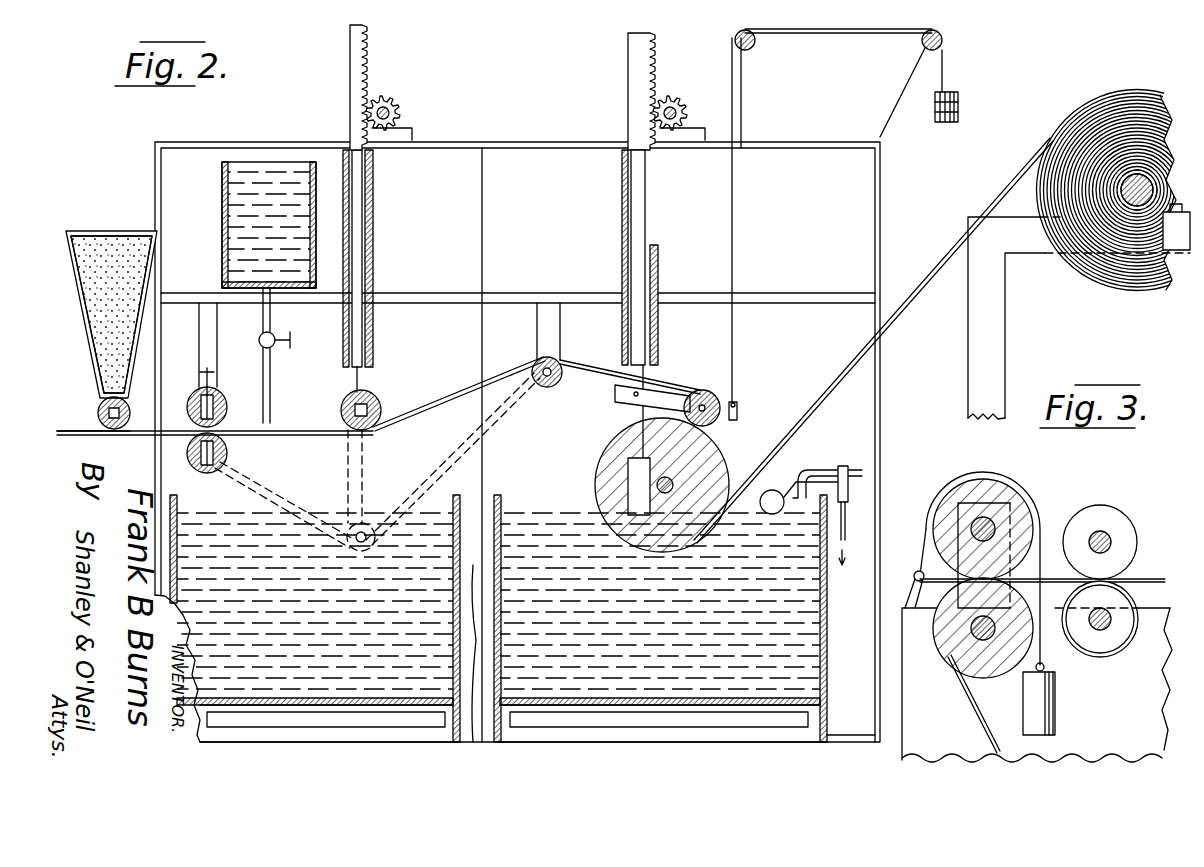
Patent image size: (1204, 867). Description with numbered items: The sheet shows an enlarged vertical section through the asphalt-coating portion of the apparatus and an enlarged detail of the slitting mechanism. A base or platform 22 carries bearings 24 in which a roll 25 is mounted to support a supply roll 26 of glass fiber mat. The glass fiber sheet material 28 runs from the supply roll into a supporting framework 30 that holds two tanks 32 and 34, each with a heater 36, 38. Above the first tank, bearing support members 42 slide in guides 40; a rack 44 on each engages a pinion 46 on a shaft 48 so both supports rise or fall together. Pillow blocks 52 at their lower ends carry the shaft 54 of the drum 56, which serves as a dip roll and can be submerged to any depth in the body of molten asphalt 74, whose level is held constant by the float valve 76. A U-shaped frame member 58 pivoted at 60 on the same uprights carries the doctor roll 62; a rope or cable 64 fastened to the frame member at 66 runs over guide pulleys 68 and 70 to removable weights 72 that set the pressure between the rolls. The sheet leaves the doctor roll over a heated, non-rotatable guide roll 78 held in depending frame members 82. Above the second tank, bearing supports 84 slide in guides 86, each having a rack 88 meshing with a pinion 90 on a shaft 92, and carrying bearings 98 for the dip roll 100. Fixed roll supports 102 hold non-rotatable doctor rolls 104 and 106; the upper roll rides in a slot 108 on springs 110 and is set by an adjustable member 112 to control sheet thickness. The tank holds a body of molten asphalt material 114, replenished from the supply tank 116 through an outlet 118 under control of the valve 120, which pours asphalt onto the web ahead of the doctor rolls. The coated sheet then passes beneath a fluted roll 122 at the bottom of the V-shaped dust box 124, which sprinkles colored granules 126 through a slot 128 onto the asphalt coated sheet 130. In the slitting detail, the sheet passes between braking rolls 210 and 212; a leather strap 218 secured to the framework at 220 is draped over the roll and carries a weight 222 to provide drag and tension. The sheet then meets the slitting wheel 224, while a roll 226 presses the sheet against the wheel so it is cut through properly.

In FIG. 2, the base or platform 22 is at (990, 329).
In FIG. 2, the bearings 24 is at (1118, 203).
In FIG. 2, the roll 25 is at (1137, 200).
In FIG. 2, the supply roll 26 is at (1125, 105).
In FIG. 2, the glass fiber sheet material 28 is at (1043, 140).
In FIG. 2, the supporting framework 30 is at (882, 186).
In FIG. 2, the tank 32 is at (827, 620).
In FIG. 2, the tank 34 is at (470, 742).
In FIG. 2, the heater 36 is at (707, 718).
In FIG. 2, the heater 38 is at (392, 718).
In FIG. 2, the guides 40 is at (660, 262).
In FIG. 2, the bearing support members 42 is at (659, 335).
In FIG. 2, the rack 44 is at (658, 178).
In FIG. 2, the pinion 46 is at (683, 106).
In FIG. 2, the shaft 48 is at (676, 100).
In FIG. 2, the pillow blocks 52 is at (680, 455).
In FIG. 2, the shaft 54 is at (672, 482).
In FIG. 2, the drum 56 is at (607, 462).
In FIG. 2, the U-shaped frame member 58 is at (660, 398).
In FIG. 2, the pivot 60 is at (632, 398).
In FIG. 2, the doctor roll 62 is at (708, 398).
In FIG. 2, the rope or cable 64 is at (735, 245).
In FIG. 2, the cable attachment 66 is at (740, 405).
In FIG. 2, the guide pulley 68 is at (748, 60).
In FIG. 2, the guide pulley 70 is at (935, 52).
In FIG. 2, the removable weights 72 is at (958, 95).
In FIG. 2, the body of molten asphalt 74 is at (513, 511).
In FIG. 2, the float valve 76 is at (845, 466).
In FIG. 2, the guide roll 78 is at (552, 390).
In FIG. 2, the depending frame members 82 is at (562, 325).
In FIG. 2, the bearing supports 84 is at (356, 217).
In FIG. 2, the guides 86 is at (374, 190).
In FIG. 2, the rack 88 is at (368, 48).
In FIG. 2, the pinion 90 is at (390, 105).
In FIG. 2, the shaft 92 is at (390, 113).
In FIG. 2, the bearings 98 is at (375, 398).
In FIG. 2, the dip roll 100 is at (380, 400).
In FIG. 2, the roll supports 102 is at (218, 348).
In FIG. 2, the doctor roll 104 is at (222, 402).
In FIG. 2, the doctor roll 106 is at (213, 470).
In FIG. 2, the slot 108 is at (214, 386).
In FIG. 2, the springs 110 is at (225, 408).
In FIG. 2, the adjustable member 112 is at (203, 372).
In FIG. 2, the body of molten asphalt material 114 is at (183, 515).
In FIG. 2, the supply tank 116 is at (222, 178).
In FIG. 2, the outlet 118 is at (272, 322).
In FIG. 2, the valve 120 is at (278, 348).
In FIG. 2, the roll 122 is at (122, 405).
In FIG. 2, the dust box 124 is at (72, 231).
In FIG. 2, the colored granules 126 is at (110, 240).
In FIG. 2, the slot 128 is at (118, 398).
In FIG. 2, the asphalt coated sheet 130 is at (138, 432).
In FIG. 3, the asphalt coated sheet 130 is at (1050, 560).
In FIG. 3, the braking roll 210 is at (952, 672).
In FIG. 3, the braking roll 212 is at (1005, 490).
In FIG. 3, the leather strap 218 is at (970, 478).
In FIG. 3, the strap attachment 220 is at (905, 560).
In FIG. 3, the weight 222 is at (1055, 710).
In FIG. 3, the slitting wheel 224 is at (1112, 645).
In FIG. 3, the roll 226 is at (1115, 522).